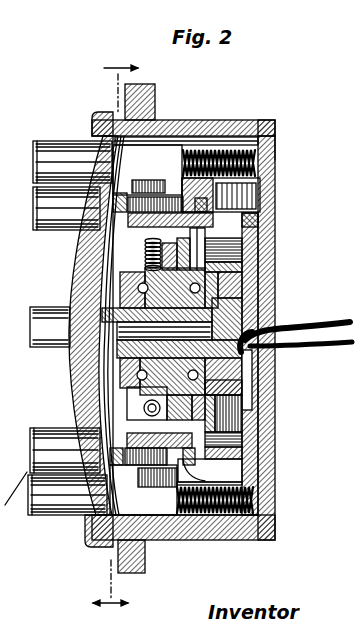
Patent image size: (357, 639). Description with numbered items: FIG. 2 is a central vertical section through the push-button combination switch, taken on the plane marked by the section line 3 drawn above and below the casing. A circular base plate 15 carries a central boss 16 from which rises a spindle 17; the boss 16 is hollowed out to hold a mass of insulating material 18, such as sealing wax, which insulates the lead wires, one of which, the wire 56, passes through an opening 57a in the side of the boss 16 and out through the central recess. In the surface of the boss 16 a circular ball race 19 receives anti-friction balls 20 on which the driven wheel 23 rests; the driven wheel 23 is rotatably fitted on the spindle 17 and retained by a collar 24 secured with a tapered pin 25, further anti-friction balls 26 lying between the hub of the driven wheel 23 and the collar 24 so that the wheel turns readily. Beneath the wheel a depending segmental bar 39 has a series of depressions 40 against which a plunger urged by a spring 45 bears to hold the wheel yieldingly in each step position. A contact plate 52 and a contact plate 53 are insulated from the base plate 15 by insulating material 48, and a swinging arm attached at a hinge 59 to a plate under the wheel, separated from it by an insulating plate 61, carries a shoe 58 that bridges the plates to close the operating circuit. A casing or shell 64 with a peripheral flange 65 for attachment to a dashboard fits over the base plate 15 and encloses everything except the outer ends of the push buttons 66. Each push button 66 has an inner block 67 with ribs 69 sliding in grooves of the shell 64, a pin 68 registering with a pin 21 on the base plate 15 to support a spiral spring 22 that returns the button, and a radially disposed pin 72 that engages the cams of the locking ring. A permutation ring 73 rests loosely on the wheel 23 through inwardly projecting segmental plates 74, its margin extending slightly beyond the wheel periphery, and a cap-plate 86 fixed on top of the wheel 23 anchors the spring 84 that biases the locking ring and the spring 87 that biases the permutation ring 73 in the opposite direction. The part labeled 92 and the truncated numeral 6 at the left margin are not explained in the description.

The section line 3 is at (115, 339).
The peripheral flange 65 is at (147, 88).
The ribs 69 is at (152, 147).
The casing or shell 64 is at (236, 138).
The permutation or unlocking ring 73 is at (262, 127).
The segmental plates 74 is at (278, 140).
The spiral springs 22 is at (277, 146).
The pins 21 is at (272, 168).
The depressions 40 is at (238, 215).
The base plate 15 is at (272, 208).
The segmental bar 39 is at (252, 230).
The driven wheel 23 is at (245, 255).
The anti-friction balls 20 is at (235, 265).
The central boss 16 is at (262, 274).
The ball race 19 is at (270, 290).
The insulating material 18 is at (268, 358).
The opening 57a is at (262, 380).
The hinge 59 is at (258, 401).
The contact plate 53 is at (267, 408).
The insulating material 48 is at (270, 441).
The spring 45 is at (268, 452).
The contact plate 52 is at (265, 466).
The insulating plate 61 is at (266, 488).
The pin 68 is at (186, 540).
The block 67 is at (125, 158).
The push buttons 66 is at (33, 180).
The contact device or shoe 58 is at (36, 232).
The wire 56 is at (36, 262).
The pin 72 is at (113, 203).
The spring 87 is at (147, 252).
The anti-friction balls 26 is at (140, 294).
The plate 92 is at (40, 312).
The cap-plate 86 is at (58, 362).
The spindle 17 is at (90, 355).
The tapered pin 25 is at (118, 370).
The collar 24 is at (116, 392).
The spring 84 is at (110, 425).
The conduit 6 is at (13, 501).